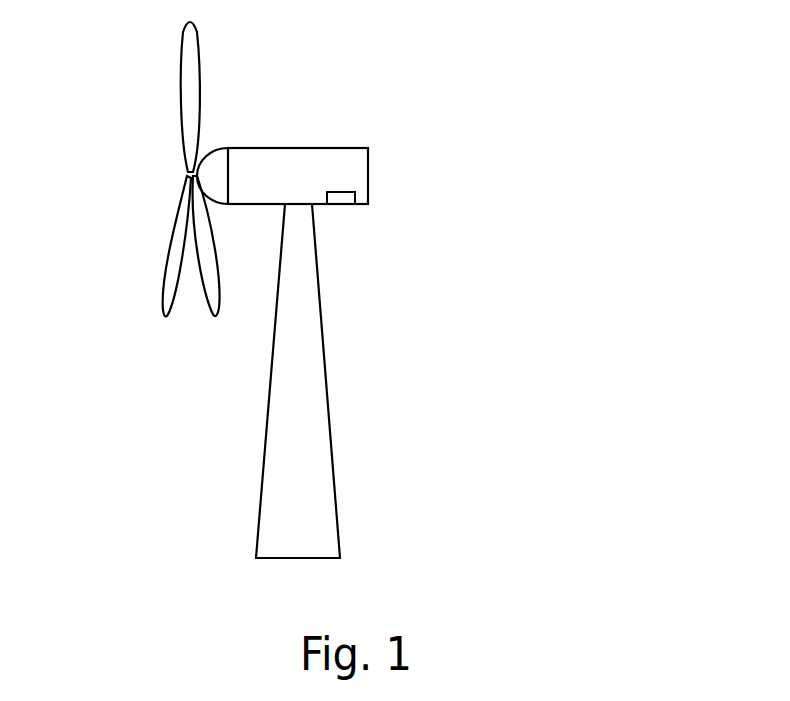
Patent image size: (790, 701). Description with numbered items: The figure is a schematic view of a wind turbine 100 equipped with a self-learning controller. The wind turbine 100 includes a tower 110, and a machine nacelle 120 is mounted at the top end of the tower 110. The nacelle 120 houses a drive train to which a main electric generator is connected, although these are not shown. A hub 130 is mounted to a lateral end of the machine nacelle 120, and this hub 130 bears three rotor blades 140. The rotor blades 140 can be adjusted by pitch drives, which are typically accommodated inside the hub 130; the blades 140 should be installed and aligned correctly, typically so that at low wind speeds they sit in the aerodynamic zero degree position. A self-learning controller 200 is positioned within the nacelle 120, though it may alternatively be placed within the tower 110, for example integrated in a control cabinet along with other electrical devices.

The wind turbine 100 is at (708, 98).
The tower 110 is at (328, 398).
The machine nacelle 120 is at (368, 182).
The hub 130 is at (215, 152).
The rotor blades 140 is at (183, 85).
The self-learning controller 200 is at (348, 199).